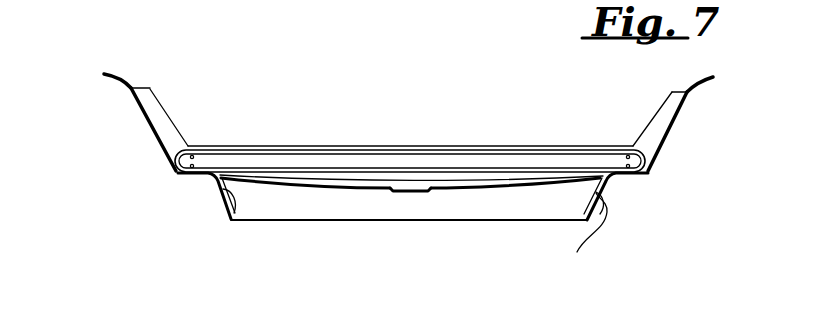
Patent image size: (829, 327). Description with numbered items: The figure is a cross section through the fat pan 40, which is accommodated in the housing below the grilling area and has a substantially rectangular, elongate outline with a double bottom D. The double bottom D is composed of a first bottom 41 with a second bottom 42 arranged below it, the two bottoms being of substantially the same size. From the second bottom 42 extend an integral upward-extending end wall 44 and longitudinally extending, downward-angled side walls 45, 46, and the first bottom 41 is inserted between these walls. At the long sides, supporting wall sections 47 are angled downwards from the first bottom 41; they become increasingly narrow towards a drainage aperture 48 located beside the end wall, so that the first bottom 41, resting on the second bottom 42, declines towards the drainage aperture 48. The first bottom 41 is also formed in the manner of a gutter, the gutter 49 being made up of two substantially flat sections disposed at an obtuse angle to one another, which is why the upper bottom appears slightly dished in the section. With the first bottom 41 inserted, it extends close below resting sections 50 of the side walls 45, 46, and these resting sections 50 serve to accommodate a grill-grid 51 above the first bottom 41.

The fat pan 40 is at (363, 240).
The first bottom 41 is at (460, 189).
The second bottom 42 is at (493, 221).
The end wall 44 is at (275, 202).
The side wall 45 is at (213, 182).
The side wall 46 is at (585, 241).
The supporting wall section 47 is at (231, 219).
The drainage aperture 48 is at (416, 190).
The gutter 49 is at (421, 152).
The resting section 50 is at (185, 171).
The grill-grid 51 is at (475, 155).
The double bottom D is at (321, 188).